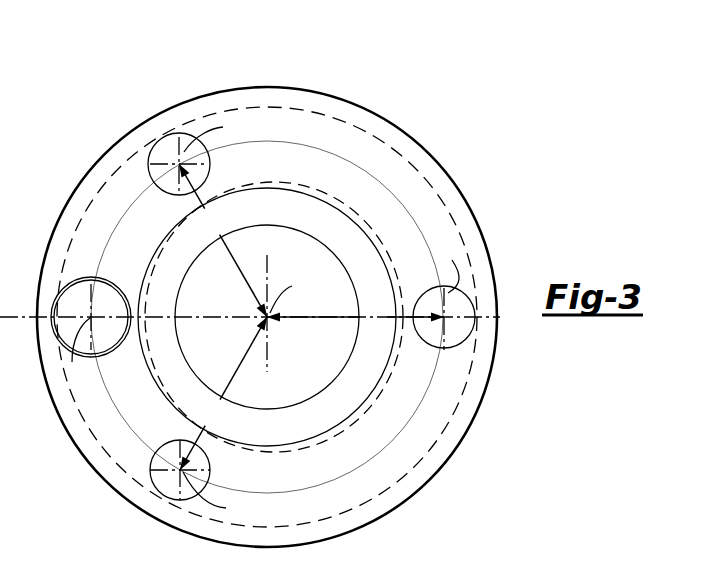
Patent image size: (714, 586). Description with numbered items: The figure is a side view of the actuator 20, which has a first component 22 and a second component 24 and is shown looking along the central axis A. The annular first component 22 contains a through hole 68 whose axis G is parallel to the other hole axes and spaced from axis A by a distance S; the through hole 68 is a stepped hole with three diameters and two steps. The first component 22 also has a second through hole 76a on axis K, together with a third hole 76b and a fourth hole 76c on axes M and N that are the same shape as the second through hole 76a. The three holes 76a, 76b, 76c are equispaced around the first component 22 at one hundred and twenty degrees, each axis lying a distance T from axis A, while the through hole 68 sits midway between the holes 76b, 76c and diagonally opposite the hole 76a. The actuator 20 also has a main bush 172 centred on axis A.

The actuator 20 is at (334, 78).
The first component 22 is at (392, 125).
The second component 24 is at (430, 428).
The through hole 68 is at (83, 290).
The second through hole 76a is at (458, 330).
The third hole 76b is at (165, 480).
The fourth hole 76c is at (167, 150).
The main bush 172 is at (324, 196).